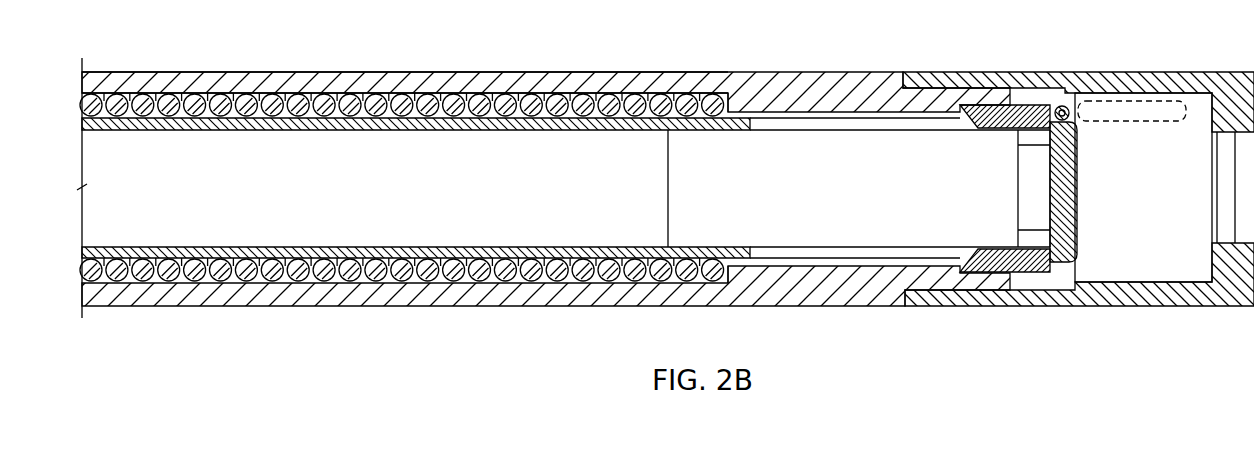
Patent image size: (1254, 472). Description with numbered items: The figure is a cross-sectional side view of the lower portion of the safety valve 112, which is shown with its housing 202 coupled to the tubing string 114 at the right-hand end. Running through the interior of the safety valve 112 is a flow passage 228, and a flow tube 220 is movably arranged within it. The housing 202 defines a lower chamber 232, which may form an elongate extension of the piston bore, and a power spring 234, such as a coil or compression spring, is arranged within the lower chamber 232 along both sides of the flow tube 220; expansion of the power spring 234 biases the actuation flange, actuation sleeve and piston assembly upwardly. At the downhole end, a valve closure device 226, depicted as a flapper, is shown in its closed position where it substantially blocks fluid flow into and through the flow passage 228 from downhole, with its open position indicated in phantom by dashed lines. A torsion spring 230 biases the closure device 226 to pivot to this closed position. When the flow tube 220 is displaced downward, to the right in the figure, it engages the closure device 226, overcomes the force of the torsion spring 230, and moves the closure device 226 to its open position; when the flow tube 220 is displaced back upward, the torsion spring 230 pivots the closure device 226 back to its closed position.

The safety valve 112 is at (784, 39).
The tubing string 114 is at (1150, 72).
The housing 202 is at (527, 76).
The flow tube 220 is at (421, 133).
The valve closure device 226 is at (1076, 176).
The flow passage 228 is at (888, 192).
The torsion spring 230 is at (1057, 106).
The lower chamber 232 is at (290, 92).
The power spring 234 is at (382, 96).